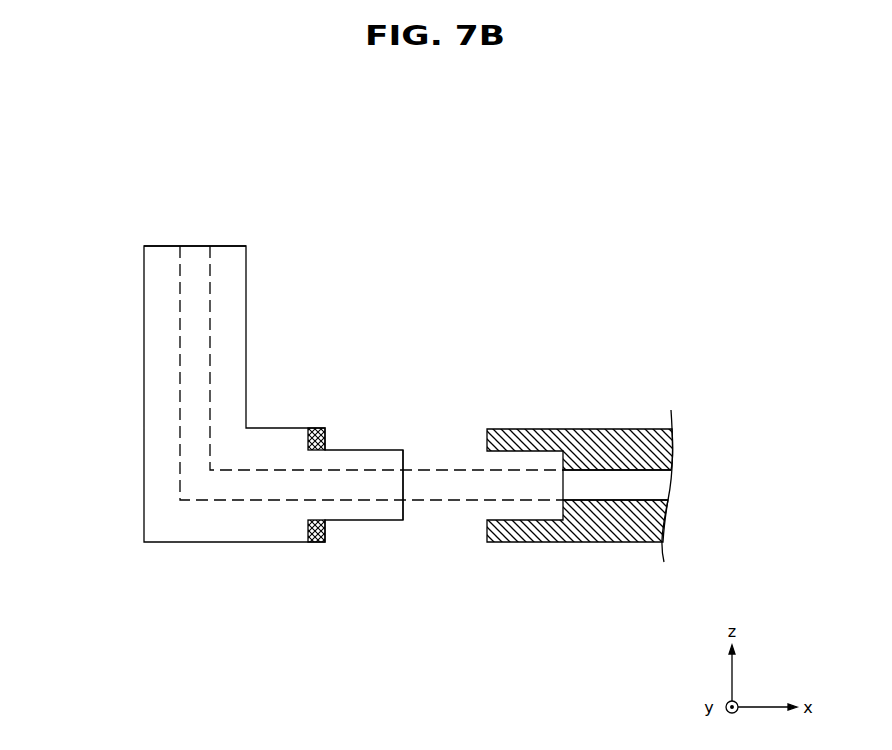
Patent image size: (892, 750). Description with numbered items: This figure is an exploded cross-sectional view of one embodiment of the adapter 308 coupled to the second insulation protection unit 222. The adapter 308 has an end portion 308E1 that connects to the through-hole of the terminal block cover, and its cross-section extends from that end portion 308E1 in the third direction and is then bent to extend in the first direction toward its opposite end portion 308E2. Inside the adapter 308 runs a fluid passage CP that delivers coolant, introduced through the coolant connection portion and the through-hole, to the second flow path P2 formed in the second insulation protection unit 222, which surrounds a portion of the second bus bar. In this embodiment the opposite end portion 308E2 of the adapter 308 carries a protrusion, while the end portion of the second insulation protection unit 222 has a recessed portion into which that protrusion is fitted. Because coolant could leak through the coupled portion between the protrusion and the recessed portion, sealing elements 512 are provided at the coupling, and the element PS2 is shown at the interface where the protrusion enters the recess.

The adapter 308 is at (144, 299).
The end portion 308E1 is at (233, 246).
The opposite end portion 308E2 is at (405, 513).
The fluid passage CP is at (197, 278).
The sealing member 512 is at (316, 428).
The second pad surface PS2 is at (563, 486).
The second flow path P2 is at (628, 486).
The second insulation protection unit 222 is at (612, 527).